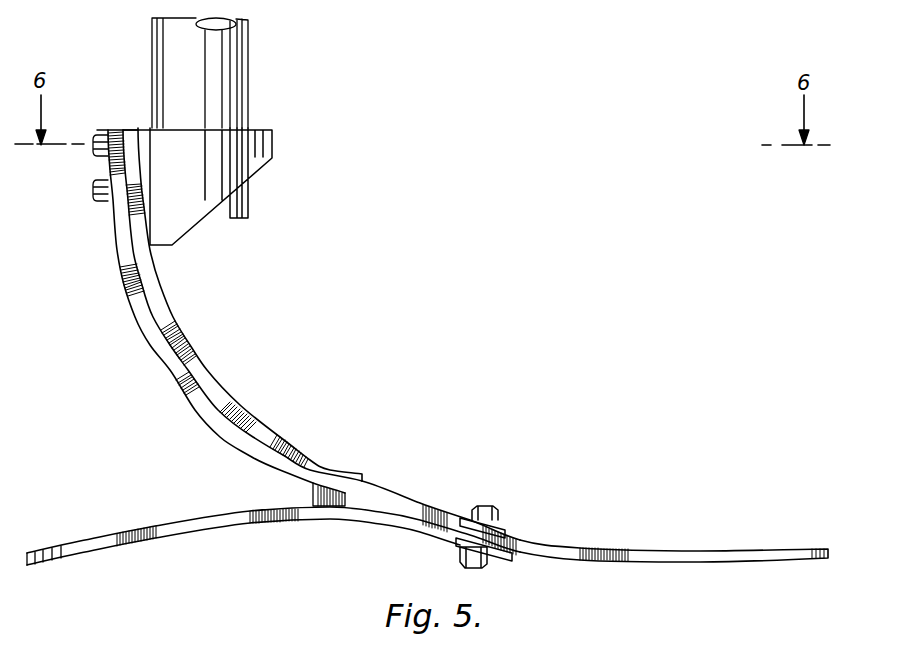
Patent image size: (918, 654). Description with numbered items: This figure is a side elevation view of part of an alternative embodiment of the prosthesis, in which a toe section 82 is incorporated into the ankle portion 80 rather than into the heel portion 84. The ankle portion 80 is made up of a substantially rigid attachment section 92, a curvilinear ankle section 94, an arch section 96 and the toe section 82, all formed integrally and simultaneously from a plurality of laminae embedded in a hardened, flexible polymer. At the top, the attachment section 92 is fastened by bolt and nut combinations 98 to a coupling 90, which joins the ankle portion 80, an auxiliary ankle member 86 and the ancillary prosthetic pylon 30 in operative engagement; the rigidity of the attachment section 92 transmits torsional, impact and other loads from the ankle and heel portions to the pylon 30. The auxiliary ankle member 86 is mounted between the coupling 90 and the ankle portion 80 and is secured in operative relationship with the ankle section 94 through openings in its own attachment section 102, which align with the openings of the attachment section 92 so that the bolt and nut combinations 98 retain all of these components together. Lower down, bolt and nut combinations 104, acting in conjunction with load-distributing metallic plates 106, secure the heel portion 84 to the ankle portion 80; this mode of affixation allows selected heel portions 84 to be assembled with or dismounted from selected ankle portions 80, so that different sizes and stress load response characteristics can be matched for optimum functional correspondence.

The pylon 30 is at (250, 66).
The ankle portion 80 is at (187, 407).
The toe section 82 is at (777, 547).
The heel portion 84 is at (250, 524).
The auxiliary ankle member 86 is at (240, 394).
The coupling 90 is at (227, 164).
The attachment section 92 is at (108, 170).
The curvilinear ankle section 94 is at (137, 326).
The arch section 96 is at (414, 500).
The bolt and nut combinations 98 is at (97, 143).
The attachment section 102 is at (134, 128).
The bolt and nut combinations 104 is at (492, 507).
The load-distributing metallic plates 106 is at (505, 526).